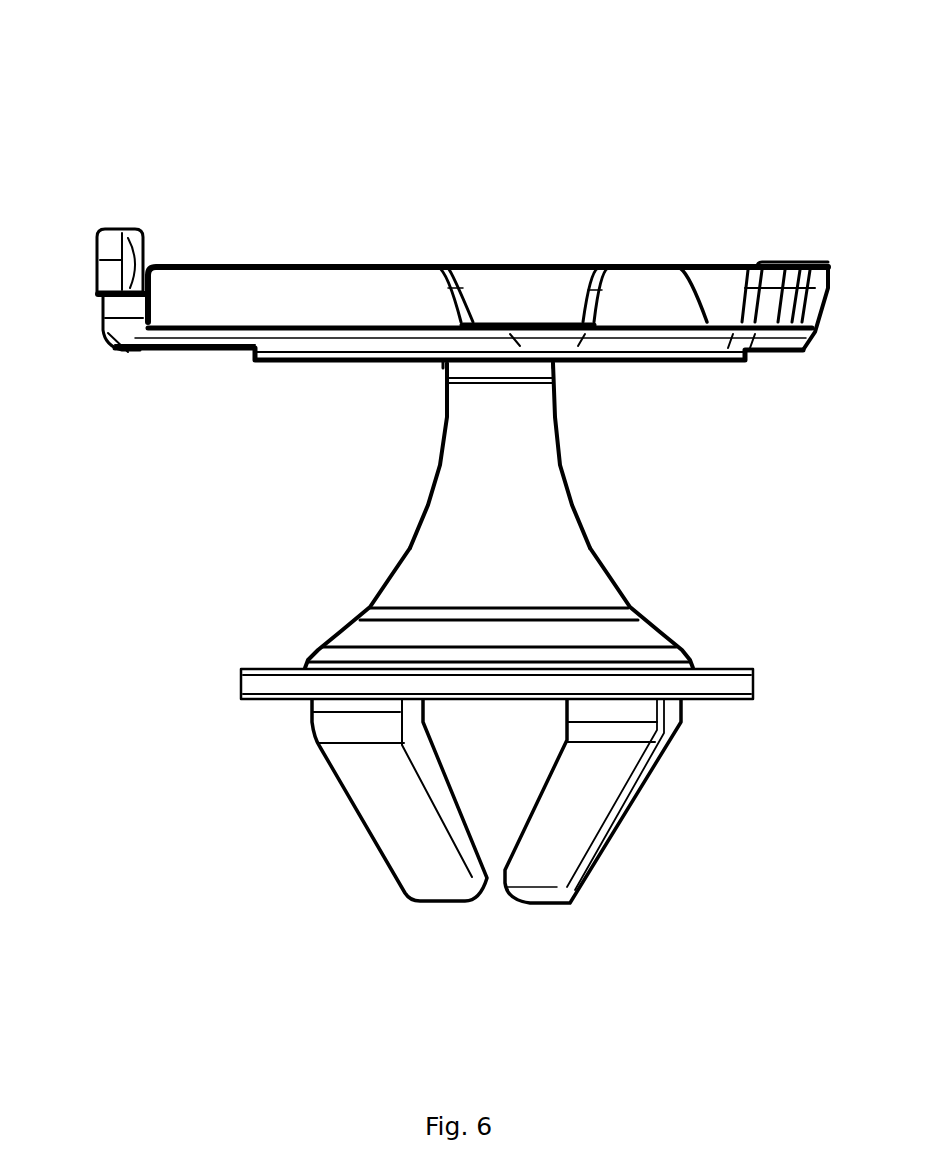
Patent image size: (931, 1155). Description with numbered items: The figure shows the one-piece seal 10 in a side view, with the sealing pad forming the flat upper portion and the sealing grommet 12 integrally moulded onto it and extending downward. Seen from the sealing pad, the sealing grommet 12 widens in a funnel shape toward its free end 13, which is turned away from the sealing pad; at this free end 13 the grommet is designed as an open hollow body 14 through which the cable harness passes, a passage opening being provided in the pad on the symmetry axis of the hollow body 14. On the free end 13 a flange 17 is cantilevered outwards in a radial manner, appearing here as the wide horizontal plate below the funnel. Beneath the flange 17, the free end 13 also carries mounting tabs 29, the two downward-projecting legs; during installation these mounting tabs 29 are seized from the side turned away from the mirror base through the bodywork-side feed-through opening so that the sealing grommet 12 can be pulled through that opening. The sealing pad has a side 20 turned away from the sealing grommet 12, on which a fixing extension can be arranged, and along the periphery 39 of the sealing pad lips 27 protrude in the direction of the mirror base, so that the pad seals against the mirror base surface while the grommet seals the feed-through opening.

The seal 10 is at (258, 118).
The sealing grommet 12 is at (533, 517).
The free end 13 is at (285, 710).
The hollow body 14 is at (453, 517).
The flange 17 is at (700, 684).
The side 20 is at (520, 316).
The lip 27 is at (323, 287).
The mounting tab 29 is at (582, 815).
The periphery 39 is at (111, 338).